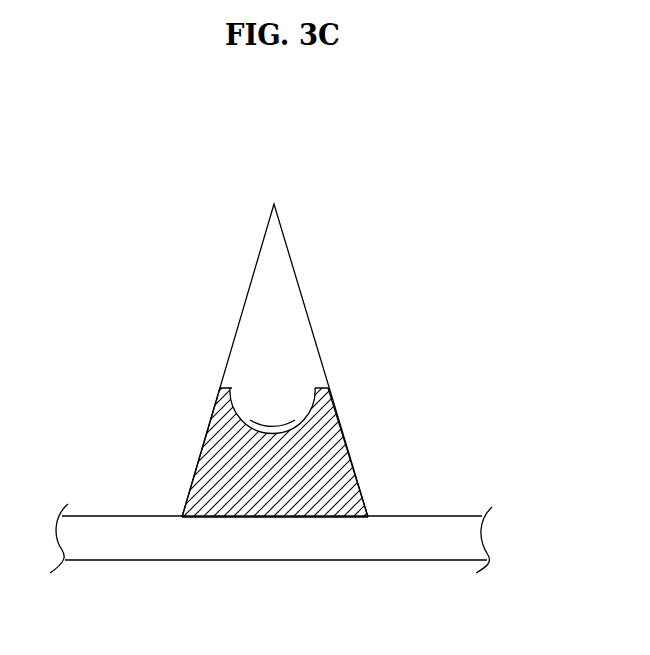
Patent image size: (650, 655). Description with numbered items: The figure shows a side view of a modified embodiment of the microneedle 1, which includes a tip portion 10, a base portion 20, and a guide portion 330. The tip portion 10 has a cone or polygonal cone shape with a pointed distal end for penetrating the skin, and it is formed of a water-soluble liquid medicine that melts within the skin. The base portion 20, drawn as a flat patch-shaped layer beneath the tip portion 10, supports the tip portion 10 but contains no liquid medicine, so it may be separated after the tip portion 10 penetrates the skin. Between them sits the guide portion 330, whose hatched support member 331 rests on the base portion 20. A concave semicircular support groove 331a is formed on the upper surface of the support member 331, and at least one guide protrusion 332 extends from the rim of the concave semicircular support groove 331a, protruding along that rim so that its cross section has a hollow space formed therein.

The microneedle 1 is at (283, 153).
The tip portion 10 is at (275, 281).
The base portion 20 is at (332, 552).
The guide portion 330 is at (425, 357).
The support member 331 is at (338, 463).
The concave semicircular support groove 331a is at (283, 428).
The guide protrusion 332 is at (325, 398).